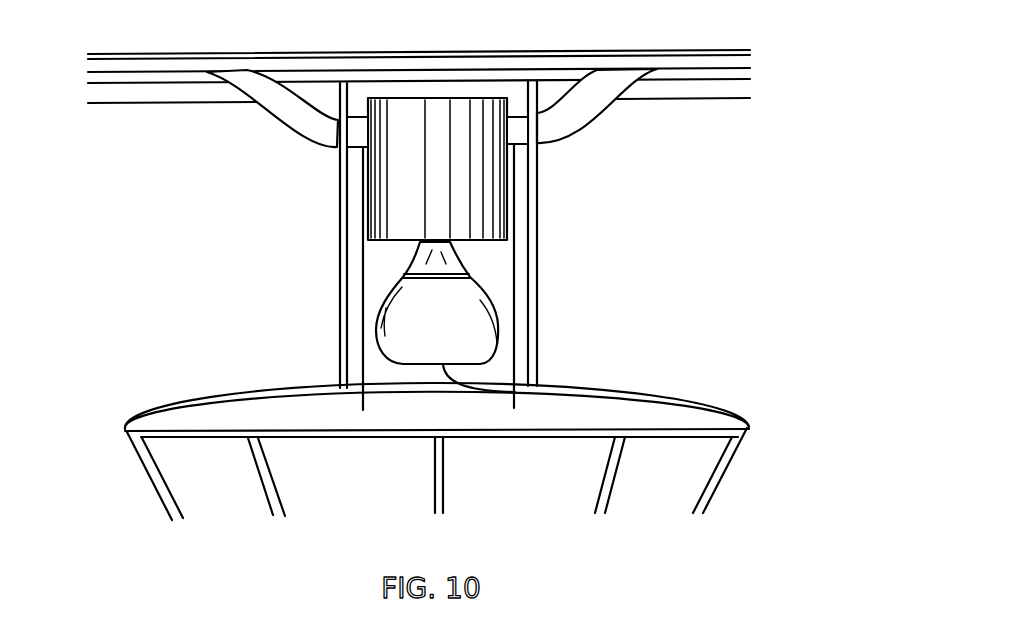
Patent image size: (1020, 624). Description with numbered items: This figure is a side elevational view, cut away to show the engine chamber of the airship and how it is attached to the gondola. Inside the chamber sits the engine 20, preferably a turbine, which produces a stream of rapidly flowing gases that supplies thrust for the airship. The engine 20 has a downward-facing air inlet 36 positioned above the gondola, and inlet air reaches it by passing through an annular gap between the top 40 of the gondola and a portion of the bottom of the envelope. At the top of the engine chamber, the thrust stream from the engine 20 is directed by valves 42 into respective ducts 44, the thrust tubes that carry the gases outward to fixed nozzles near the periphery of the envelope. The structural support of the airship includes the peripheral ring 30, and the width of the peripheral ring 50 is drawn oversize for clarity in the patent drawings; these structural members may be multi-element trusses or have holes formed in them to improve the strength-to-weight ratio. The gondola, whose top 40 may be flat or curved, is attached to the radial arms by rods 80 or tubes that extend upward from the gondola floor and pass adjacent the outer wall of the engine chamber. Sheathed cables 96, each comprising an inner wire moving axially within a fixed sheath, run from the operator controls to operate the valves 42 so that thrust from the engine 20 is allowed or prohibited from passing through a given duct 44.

The engine 20 is at (470, 316).
The peripheral ring 30 is at (503, 75).
The air inlet 36 is at (515, 392).
The top of the gondola 40 is at (610, 392).
The valve 42 is at (363, 147).
The duct 44 is at (290, 128).
The peripheral ring 50 is at (262, 53).
The rod 80 is at (540, 245).
The sheathed cable 96 is at (363, 275).